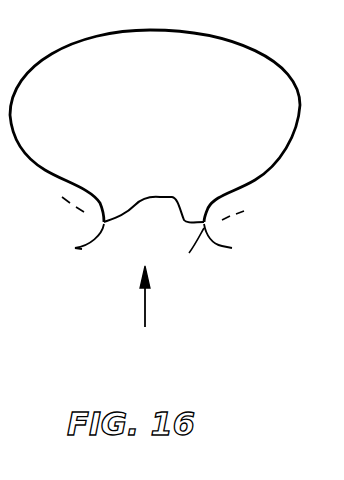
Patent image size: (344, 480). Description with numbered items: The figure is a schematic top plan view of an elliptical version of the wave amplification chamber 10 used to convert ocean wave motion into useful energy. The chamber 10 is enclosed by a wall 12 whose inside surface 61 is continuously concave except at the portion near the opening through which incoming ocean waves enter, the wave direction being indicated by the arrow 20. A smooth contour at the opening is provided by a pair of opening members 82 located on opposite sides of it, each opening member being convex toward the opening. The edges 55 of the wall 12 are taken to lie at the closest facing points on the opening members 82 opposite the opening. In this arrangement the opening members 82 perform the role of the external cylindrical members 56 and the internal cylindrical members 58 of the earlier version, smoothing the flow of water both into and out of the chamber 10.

The chamber 10 is at (173, 97).
The wall 12 is at (85, 38).
The arrow 20 is at (145, 307).
The edges 55 is at (154, 198).
The external cylindrical members 56 is at (72, 250).
The internal cylindrical members 58 is at (103, 200).
The inside surface 61 is at (12, 126).
The opening members 82 is at (107, 236).